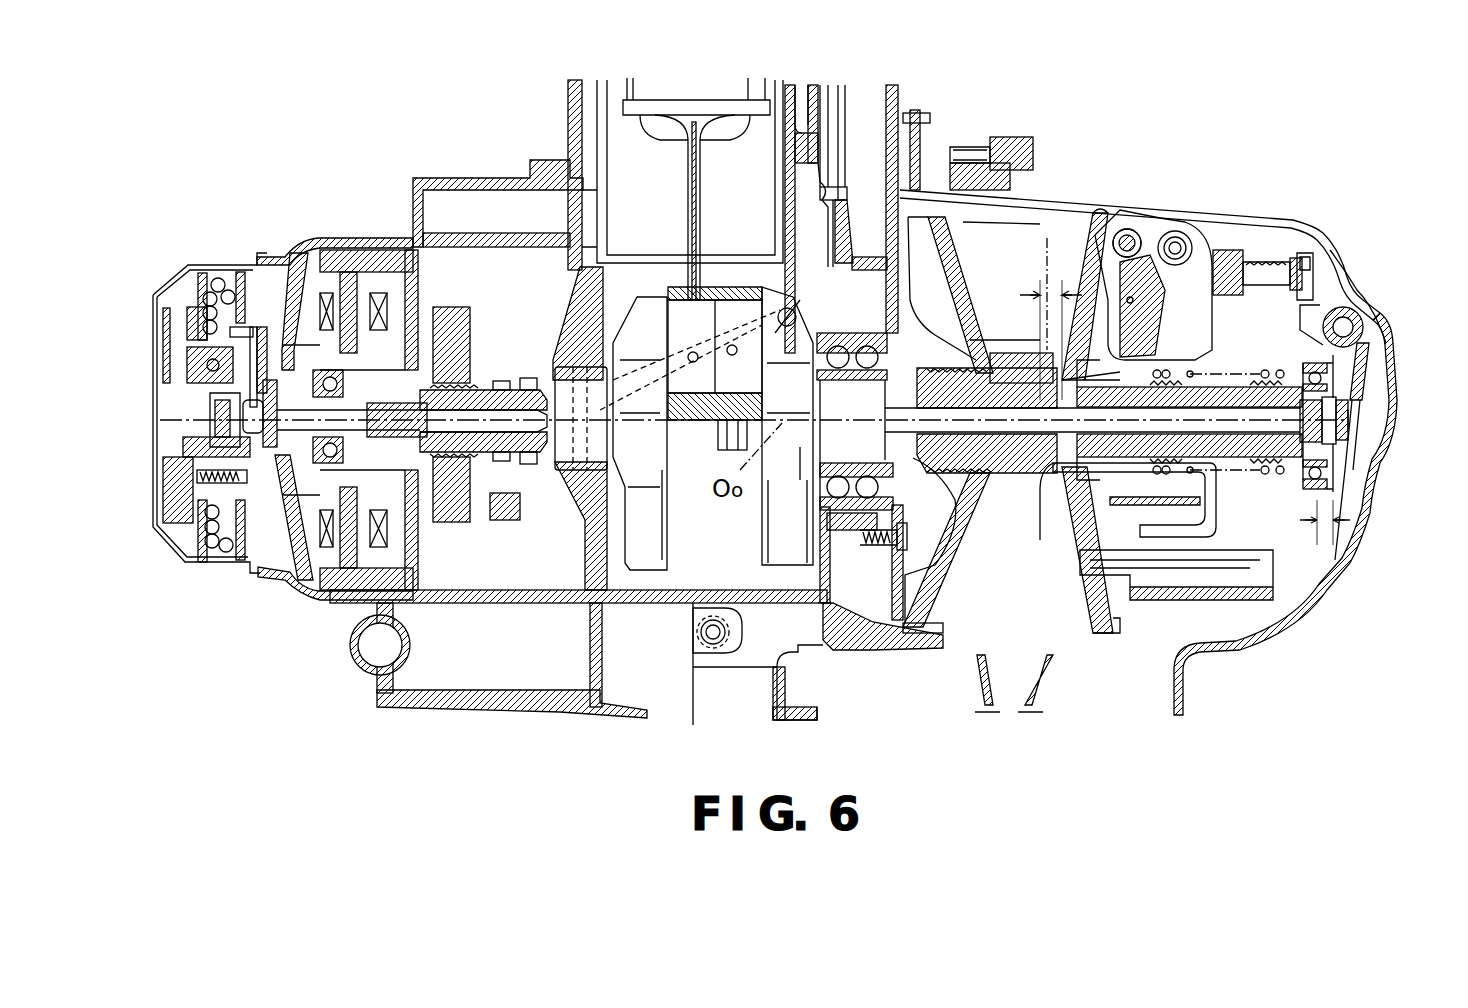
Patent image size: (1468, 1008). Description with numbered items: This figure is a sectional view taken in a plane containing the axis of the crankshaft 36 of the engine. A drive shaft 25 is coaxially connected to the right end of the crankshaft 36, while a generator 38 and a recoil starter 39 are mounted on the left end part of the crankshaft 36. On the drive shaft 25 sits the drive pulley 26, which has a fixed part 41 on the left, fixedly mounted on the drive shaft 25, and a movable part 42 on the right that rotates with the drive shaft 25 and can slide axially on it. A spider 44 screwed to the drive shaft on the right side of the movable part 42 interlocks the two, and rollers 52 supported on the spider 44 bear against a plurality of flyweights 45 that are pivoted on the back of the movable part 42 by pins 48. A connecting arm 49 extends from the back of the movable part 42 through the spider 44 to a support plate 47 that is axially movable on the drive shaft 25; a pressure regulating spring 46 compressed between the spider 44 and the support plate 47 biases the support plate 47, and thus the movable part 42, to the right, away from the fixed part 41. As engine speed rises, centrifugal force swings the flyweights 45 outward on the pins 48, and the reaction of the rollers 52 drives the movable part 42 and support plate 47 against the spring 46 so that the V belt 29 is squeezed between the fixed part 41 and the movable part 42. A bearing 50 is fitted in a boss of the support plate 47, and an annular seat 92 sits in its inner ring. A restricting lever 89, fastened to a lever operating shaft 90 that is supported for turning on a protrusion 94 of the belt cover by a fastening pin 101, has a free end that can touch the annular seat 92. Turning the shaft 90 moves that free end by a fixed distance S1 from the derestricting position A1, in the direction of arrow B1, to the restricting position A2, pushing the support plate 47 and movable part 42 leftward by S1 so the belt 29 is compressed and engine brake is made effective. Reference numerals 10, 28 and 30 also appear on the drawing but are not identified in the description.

The engine body / cylinder block 10 is at (487, 175).
The drive shaft 25 is at (1023, 460).
The drive pulley 26 is at (1047, 235).
The cooling fins 28 is at (968, 690).
The V belt 29 is at (987, 237).
The fan cover 30 is at (1305, 210).
The crankshaft 36 is at (813, 440).
The generator 38 is at (348, 244).
The recoil starter 39 is at (233, 258).
The fixed part 41 is at (968, 560).
The movable part 42 is at (1010, 553).
The spider 44 is at (1215, 333).
The flyweights 45 is at (1080, 290).
The pressure regulating spring 46 is at (1230, 487).
The support plate 47 is at (1285, 325).
The pins 48 is at (1125, 232).
The connecting arm 49 is at (1222, 250).
The bearing 50 is at (1320, 478).
The rollers 52 is at (1172, 232).
The restricting lever 89 is at (1363, 373).
The lever operating shaft 90 is at (1355, 300).
The annular seat 92 is at (1335, 470).
The protrusion 94 is at (1390, 325).
The fastening pin 101 is at (1362, 297).
The fixed distance S1 is at (1185, 412).
The derestricting position A1 is at (1343, 535).
The restricting position A2 is at (1310, 532).
The direction of arrow B1 is at (1360, 422).